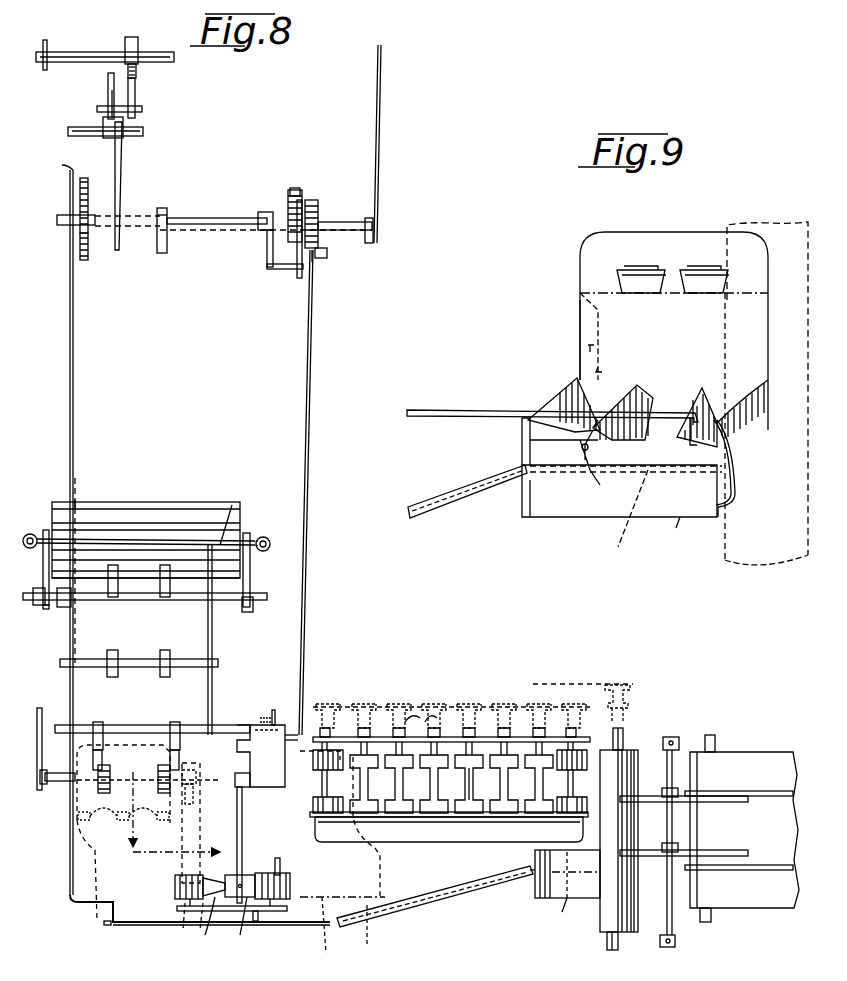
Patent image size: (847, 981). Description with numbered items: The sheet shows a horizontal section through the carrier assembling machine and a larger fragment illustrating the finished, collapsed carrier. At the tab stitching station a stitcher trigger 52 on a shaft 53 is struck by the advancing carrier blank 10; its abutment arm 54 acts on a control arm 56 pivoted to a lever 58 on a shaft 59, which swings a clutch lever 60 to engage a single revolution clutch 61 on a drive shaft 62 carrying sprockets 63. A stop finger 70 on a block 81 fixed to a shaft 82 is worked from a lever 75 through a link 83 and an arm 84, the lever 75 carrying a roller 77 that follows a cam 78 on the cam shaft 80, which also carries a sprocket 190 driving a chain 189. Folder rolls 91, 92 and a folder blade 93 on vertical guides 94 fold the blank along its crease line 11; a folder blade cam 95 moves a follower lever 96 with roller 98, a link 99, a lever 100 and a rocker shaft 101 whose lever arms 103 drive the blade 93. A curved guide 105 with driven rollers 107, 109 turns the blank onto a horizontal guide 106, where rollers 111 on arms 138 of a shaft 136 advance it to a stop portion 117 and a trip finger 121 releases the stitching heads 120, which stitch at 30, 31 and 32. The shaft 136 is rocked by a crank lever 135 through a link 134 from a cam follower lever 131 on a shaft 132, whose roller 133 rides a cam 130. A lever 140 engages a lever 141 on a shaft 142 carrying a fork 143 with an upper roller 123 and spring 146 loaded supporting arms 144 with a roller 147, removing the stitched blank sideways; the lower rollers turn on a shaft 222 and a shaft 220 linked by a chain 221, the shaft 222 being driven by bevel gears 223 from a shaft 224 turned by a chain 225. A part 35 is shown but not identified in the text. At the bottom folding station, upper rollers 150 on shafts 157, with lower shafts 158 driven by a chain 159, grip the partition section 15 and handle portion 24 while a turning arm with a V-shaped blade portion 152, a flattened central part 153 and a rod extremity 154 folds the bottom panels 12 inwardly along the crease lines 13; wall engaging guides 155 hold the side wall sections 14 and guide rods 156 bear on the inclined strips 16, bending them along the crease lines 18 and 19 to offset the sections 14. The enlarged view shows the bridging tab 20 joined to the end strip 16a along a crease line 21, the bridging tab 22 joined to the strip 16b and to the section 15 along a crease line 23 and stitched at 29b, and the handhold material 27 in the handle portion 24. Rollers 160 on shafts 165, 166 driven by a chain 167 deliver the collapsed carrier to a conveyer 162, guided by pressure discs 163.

In FIG. 8, the drive shaft 62 is at (88, 52).
In FIG. 8, the sprockets 63 is at (47, 40).
In FIG. 8, the single revolution clutch 61 is at (138, 37).
In FIG. 8, the clutch lever 60 is at (136, 92).
In FIG. 8, the lever 58 is at (108, 84).
In FIG. 8, the control arm 56 is at (110, 99).
In FIG. 8, the shaft 59 is at (142, 112).
In FIG. 8, the operating abutment arm 54 is at (103, 122).
In FIG. 8, the shaft 53 is at (80, 136).
In FIG. 8, the stitcher trigger 52 is at (121, 195).
In FIG. 8, the link 99 is at (70, 356).
In FIG. 8, the horizontal guide 106 is at (70, 884).
In FIG. 8, the stop portion 117 is at (145, 925).
In FIG. 8, the trip finger 121 is at (106, 926).
In FIG. 8, the follower lever 96 is at (66, 167).
In FIG. 8, the cam follower roller 98 is at (86, 180).
In FIG. 8, the folder blade cam 95 is at (84, 260).
In FIG. 8, the cam shaft 80 is at (62, 226).
In FIG. 8, the stop finger 70 is at (165, 253).
In FIG. 8, the block 81 is at (165, 210).
In FIG. 8, the shaft 82 is at (214, 218).
In FIG. 8, the arm 84 is at (265, 212).
In FIG. 8, the link 83 is at (267, 250).
In FIG. 8, the cam follower lever 131 is at (285, 270).
In FIG. 8, the lever 75 is at (299, 278).
In FIG. 8, the cam 78 is at (290, 190).
In FIG. 8, the cam engaging roller 77 is at (298, 188).
In FIG. 8, the cam follower roller 133 is at (312, 200).
In FIG. 8, the cam 130 is at (325, 258).
In FIG. 8, the shaft 132 is at (312, 262).
In FIG. 8, the chain 189 is at (378, 118).
In FIG. 8, the sprocket 190 is at (372, 218).
In FIG. 8, the link 134 is at (308, 412).
In FIG. 8, the folder roll 91 is at (170, 502).
In FIG. 8, the folder blade 93 is at (222, 540).
In FIG. 8, the vertical guides 94 is at (32, 533).
In FIG. 8, the lever arms 103 is at (250, 560).
In FIG. 8, the folder roll 92 is at (242, 578).
In FIG. 8, the rocker shaft 101 is at (226, 604).
In FIG. 8, the lever 100 is at (66, 607).
In FIG. 8, the driven roller 107 is at (164, 597).
In FIG. 8, the bottom panels 12 is at (77, 482).
In FIG. 9, the bottom panels 12 is at (522, 497).
In FIG. 9, the transverse crease line 13 is at (680, 519).
In FIG. 8, the curved guide 105 is at (213, 645).
In FIG. 8, the driven roller 109 is at (170, 668).
In FIG. 8, the arms 138 is at (103, 745).
In FIG. 8, the rollers 111 is at (110, 772).
In FIG. 8, the bevel gears 223 is at (188, 772).
In FIG. 8, the chain 225 is at (39, 708).
In FIG. 8, the shaft 224 is at (60, 781).
In FIG. 8, the wire stitching heads 120 is at (148, 832).
In FIG. 8, the shaft 222 is at (208, 823).
In FIG. 8, the shaft 136 is at (240, 725).
In FIG. 8, the lever 140 is at (285, 760).
In FIG. 8, the pin 35 is at (261, 714).
In FIG. 8, the crank lever 135 is at (290, 735).
In FIG. 8, the lever 141 is at (262, 787).
In FIG. 8, the shaft 142 is at (243, 826).
In FIG. 8, the roller 147 is at (288, 878).
In FIG. 8, the upper roller 123 is at (175, 886).
In FIG. 8, the shaft 220 is at (282, 860).
In FIG. 8, the chain 221 is at (186, 912).
In FIG. 8, the fork 143 is at (212, 911).
In FIG. 8, the supporting arms 144 is at (252, 911).
In FIG. 8, the spring 146 is at (258, 921).
In FIG. 8, the chain 159 is at (455, 706).
In FIG. 8, the shafts 158 is at (425, 712).
In FIG. 8, the upper rollers 150 is at (378, 790).
In FIG. 8, the shafts 157 is at (472, 785).
In FIG. 8, the guide rods 156 is at (422, 842).
In FIG. 9, the guide rods 156 is at (458, 410).
In FIG. 8, the carrier blank 10 is at (382, 880).
In FIG. 8, the blade portion 152 is at (392, 905).
In FIG. 8, the central part 153 is at (497, 882).
In FIG. 9, the central part 153 is at (515, 476).
In FIG. 8, the wall engaging guides 155 is at (548, 898).
In FIG. 8, the rod extremity 154 is at (569, 900).
In FIG. 9, the rod extremity 154 is at (623, 510).
In FIG. 8, the driving chain 167 is at (585, 683).
In FIG. 8, the shaft 166 is at (628, 688).
In FIG. 8, the roller 160 is at (636, 756).
In FIG. 9, the roller 160 is at (770, 565).
In FIG. 8, the shaft 165 is at (640, 948).
In FIG. 8, the conveyer 162 is at (768, 760).
In FIG. 8, the pressure discs 163 is at (776, 800).
In FIG. 9, the handle portion 24 is at (603, 232).
In FIG. 9, the handhold cutout material 27 is at (697, 280).
In FIG. 9, the bridging tab 22 is at (585, 313).
In FIG. 9, the longitudinal crease line 23 is at (580, 330).
In FIG. 9, the stitching location 29b is at (595, 348).
In FIG. 9, the stitching location 32 is at (600, 368).
In FIG. 9, the stitching location 31 is at (678, 372).
In FIG. 9, the stitching location 30 is at (748, 372).
In FIG. 9, the central partition section 15 is at (707, 426).
In FIG. 9, the inclined strip 16b is at (552, 402).
In FIG. 9, the inclined strips 16 is at (640, 392).
In FIG. 9, the longitudinal crease lines 19 is at (706, 410).
In FIG. 9, the inclined strip 16a is at (757, 428).
In FIG. 9, the side wall section 14 is at (558, 518).
In FIG. 9, the transverse crease line 11 is at (535, 468).
In FIG. 9, the longitudinal crease lines 18 is at (650, 440).
In FIG. 9, the bridging tab 20 is at (735, 480).
In FIG. 9, the longitudinal crease line 21 is at (737, 495).